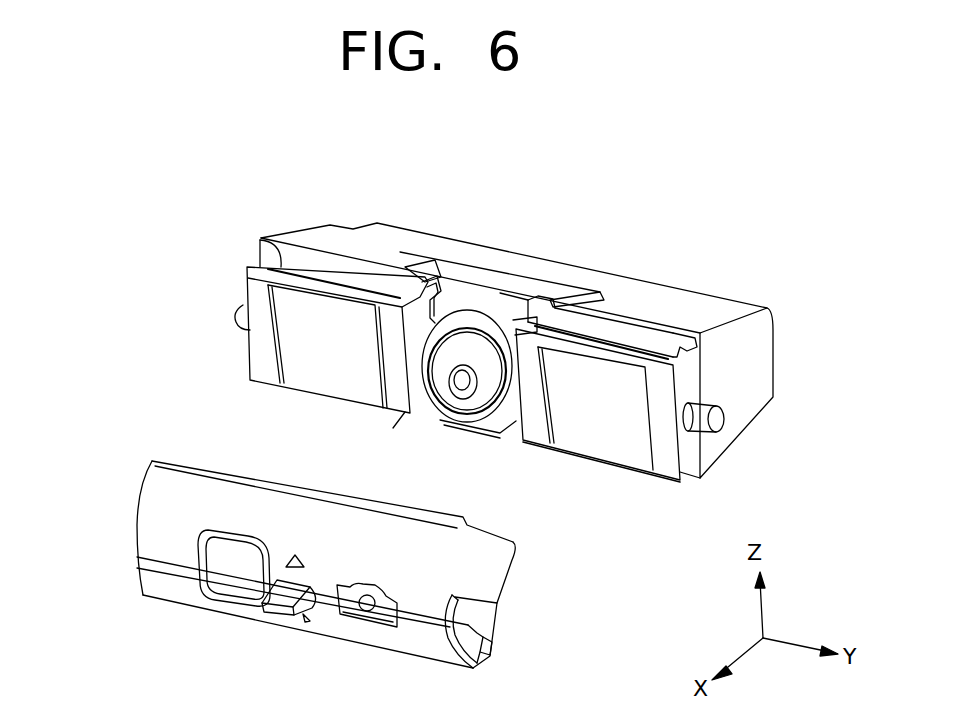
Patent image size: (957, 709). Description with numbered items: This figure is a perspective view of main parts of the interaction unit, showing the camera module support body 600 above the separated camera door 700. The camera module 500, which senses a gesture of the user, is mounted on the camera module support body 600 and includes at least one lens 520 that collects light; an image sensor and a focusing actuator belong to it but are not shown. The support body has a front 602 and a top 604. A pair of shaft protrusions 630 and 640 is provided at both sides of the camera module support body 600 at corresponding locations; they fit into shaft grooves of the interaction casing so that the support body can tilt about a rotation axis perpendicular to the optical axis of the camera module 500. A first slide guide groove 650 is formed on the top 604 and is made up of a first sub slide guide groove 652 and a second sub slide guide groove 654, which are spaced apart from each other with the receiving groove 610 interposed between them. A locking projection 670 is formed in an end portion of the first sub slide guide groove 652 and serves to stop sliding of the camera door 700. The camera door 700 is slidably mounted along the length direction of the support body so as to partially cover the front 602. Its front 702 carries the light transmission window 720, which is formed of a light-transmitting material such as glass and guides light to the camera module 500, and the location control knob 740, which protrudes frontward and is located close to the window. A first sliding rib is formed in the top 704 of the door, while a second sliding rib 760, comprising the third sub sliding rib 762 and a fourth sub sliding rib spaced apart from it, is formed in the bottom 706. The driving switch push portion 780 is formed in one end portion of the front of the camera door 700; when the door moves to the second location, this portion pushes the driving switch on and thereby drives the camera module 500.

The camera module 500 is at (480, 312).
The lens 520 is at (457, 395).
The camera module support body 600 is at (288, 212).
The front 602 is at (535, 420).
The top 604 is at (610, 319).
The receiving groove 610 is at (415, 395).
The shaft protrusion 630 is at (720, 420).
The shaft protrusion 640 is at (238, 318).
The first slide guide groove 650 is at (258, 259).
The first sub slide guide groove 652 is at (557, 306).
The second sub slide guide groove 654 is at (264, 240).
The locking projection 670 is at (670, 331).
The camera door 700 is at (145, 442).
The front 702 is at (152, 518).
The top 704 is at (448, 517).
The bottom 706 is at (484, 663).
The light transmission window 720 is at (232, 598).
The location control knob 740 is at (283, 610).
The second sliding rib 760 is at (493, 640).
The third sub sliding rib 762 is at (480, 632).
The driving switch push portion 780 is at (512, 572).